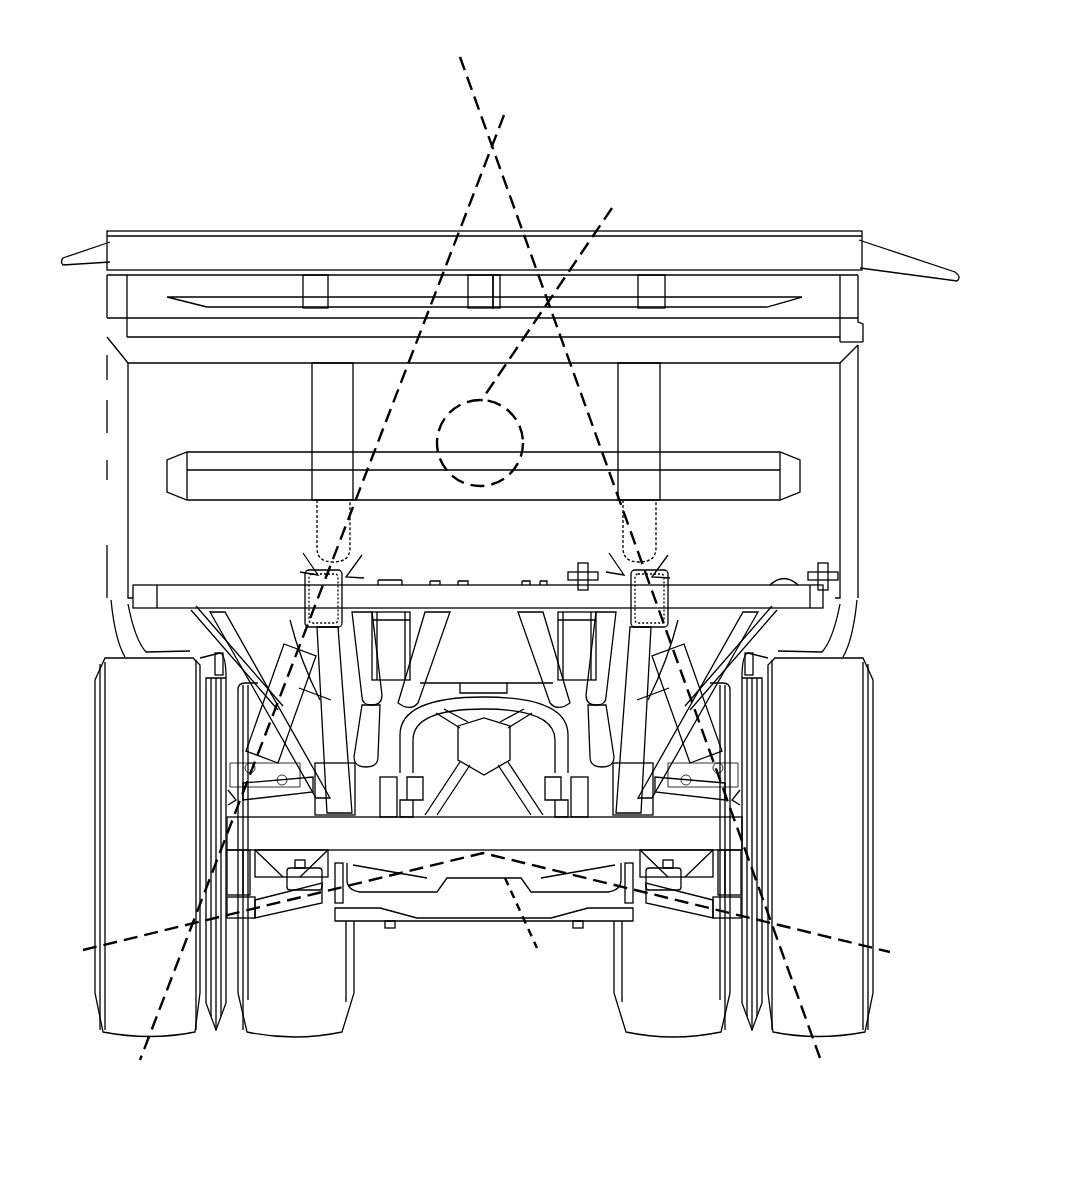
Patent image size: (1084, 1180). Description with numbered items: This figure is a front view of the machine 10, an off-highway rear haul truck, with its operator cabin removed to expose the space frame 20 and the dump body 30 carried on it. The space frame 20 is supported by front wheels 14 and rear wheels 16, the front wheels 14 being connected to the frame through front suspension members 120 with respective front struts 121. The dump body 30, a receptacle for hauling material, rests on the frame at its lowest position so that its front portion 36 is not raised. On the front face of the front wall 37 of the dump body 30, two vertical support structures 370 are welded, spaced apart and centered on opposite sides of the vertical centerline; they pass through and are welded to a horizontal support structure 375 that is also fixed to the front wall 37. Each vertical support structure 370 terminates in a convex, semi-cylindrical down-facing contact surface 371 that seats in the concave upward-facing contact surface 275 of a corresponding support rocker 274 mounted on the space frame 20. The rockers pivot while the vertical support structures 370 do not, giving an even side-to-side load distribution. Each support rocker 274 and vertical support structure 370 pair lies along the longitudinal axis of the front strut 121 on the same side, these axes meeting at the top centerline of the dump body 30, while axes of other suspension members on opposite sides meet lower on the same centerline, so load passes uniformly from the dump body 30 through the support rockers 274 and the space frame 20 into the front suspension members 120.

The machine 10 is at (159, 169).
The dump body 30 is at (886, 186).
The front portion of the dump body 36 is at (896, 284).
The front wall 37 is at (135, 418).
The horizontal support structure 375 is at (250, 476).
The vertical support structures 370 is at (318, 510).
The down-facing contact surface 371 is at (340, 562).
The upward-facing contact surface 275 is at (306, 567).
The support rocker 274 is at (312, 572).
The front strut 121 is at (262, 707).
The front suspension members 120 is at (232, 798).
The front wheels 14 is at (127, 887).
The rear wheels 16 is at (301, 1010).
The space frame 20 is at (454, 957).